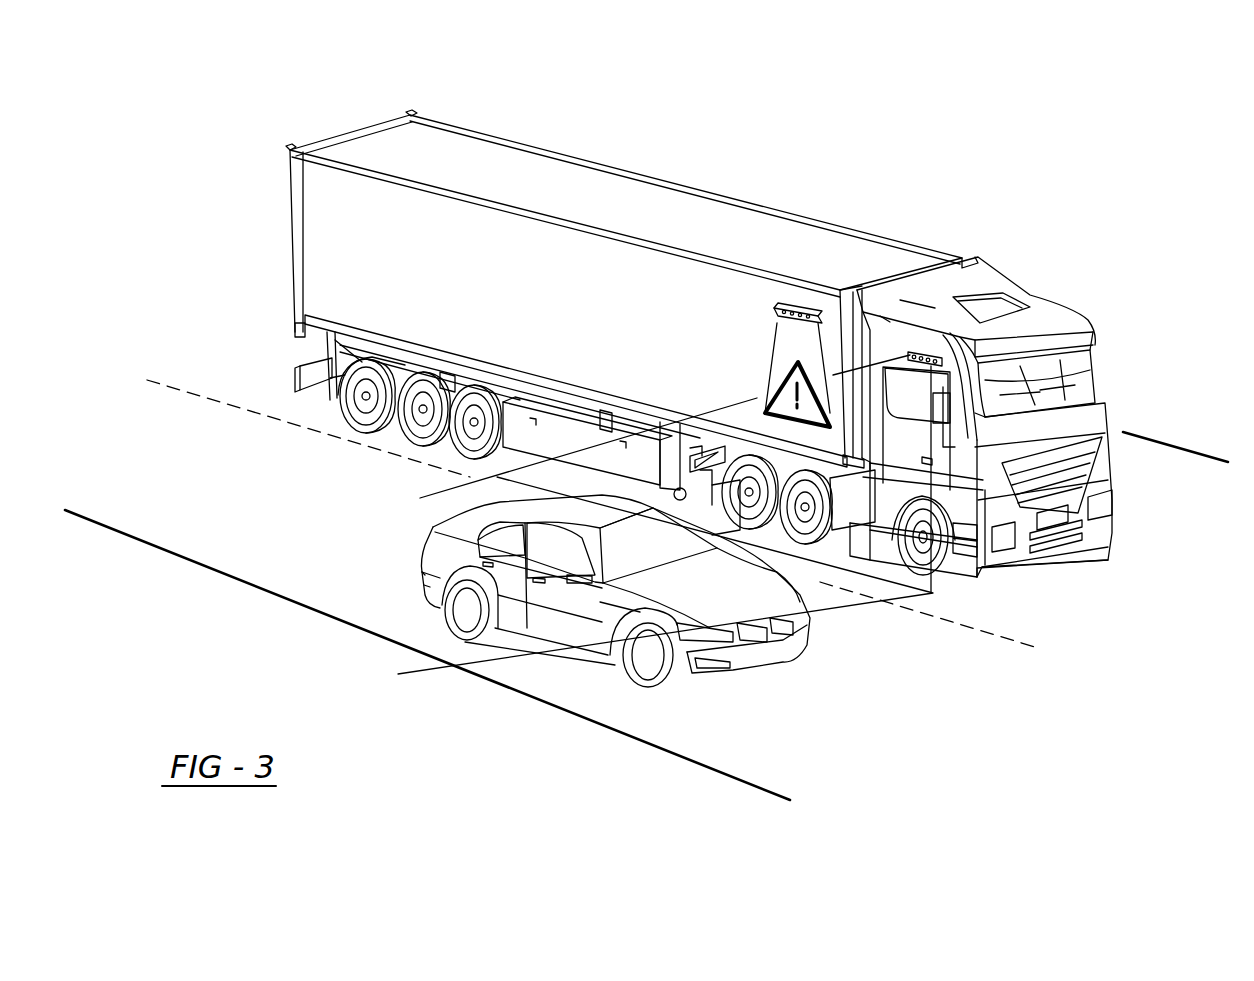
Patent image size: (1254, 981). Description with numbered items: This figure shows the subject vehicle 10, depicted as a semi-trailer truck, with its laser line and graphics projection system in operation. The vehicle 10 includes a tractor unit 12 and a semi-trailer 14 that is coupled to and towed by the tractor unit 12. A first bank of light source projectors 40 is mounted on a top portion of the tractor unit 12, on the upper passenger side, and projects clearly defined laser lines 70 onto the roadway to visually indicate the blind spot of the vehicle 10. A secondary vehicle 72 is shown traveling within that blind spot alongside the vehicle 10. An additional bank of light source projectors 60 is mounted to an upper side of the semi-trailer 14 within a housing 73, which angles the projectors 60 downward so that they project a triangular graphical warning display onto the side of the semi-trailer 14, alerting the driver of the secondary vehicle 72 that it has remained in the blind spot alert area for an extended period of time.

The vehicle 10 is at (1000, 210).
The tractor unit 12 is at (1065, 302).
The semi-trailer 14 is at (822, 222).
The light source projectors 40 is at (948, 356).
The light source projectors 60 is at (772, 312).
The projected laser lines 70 is at (806, 557).
The secondary vehicle 72 is at (424, 543).
The housing 73 is at (790, 306).